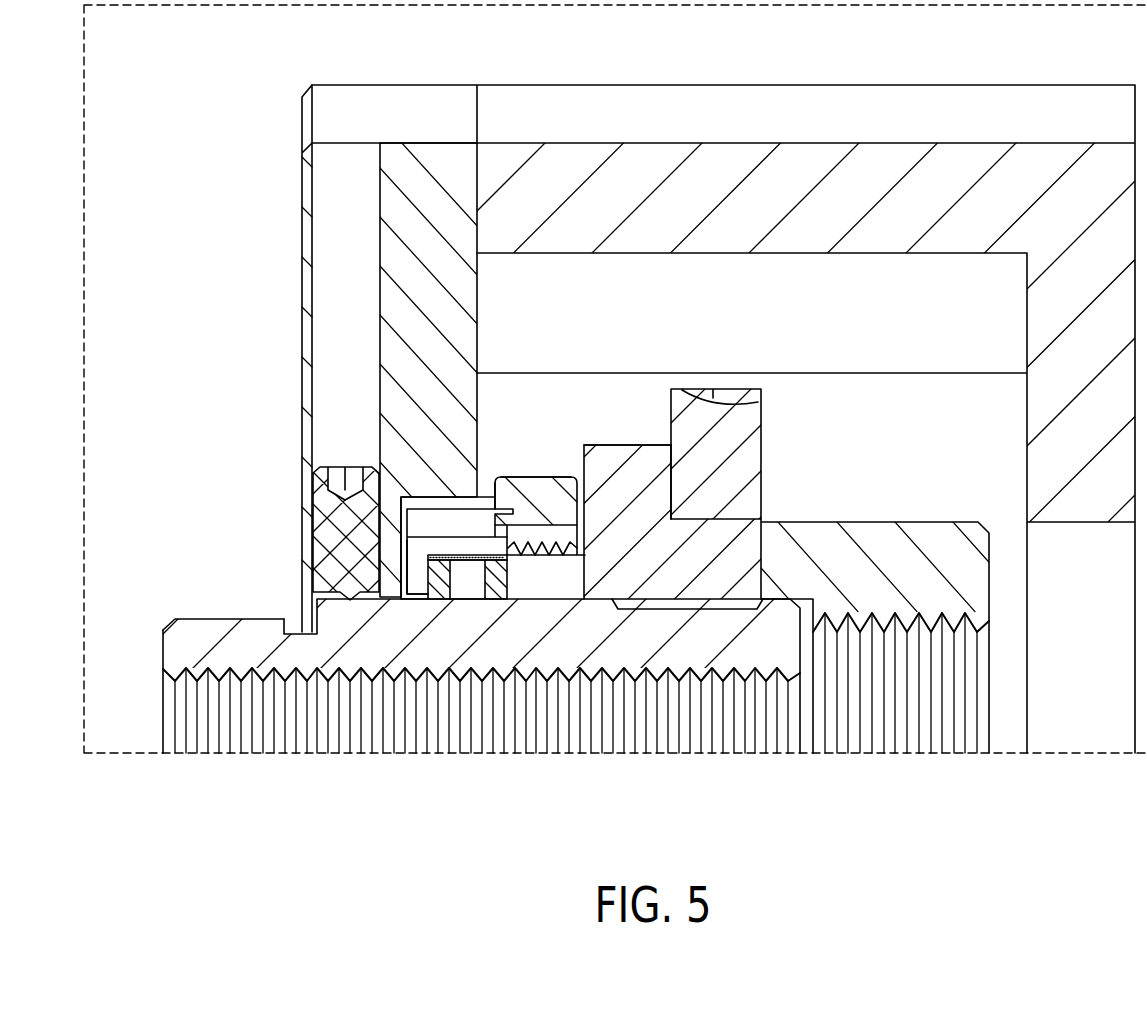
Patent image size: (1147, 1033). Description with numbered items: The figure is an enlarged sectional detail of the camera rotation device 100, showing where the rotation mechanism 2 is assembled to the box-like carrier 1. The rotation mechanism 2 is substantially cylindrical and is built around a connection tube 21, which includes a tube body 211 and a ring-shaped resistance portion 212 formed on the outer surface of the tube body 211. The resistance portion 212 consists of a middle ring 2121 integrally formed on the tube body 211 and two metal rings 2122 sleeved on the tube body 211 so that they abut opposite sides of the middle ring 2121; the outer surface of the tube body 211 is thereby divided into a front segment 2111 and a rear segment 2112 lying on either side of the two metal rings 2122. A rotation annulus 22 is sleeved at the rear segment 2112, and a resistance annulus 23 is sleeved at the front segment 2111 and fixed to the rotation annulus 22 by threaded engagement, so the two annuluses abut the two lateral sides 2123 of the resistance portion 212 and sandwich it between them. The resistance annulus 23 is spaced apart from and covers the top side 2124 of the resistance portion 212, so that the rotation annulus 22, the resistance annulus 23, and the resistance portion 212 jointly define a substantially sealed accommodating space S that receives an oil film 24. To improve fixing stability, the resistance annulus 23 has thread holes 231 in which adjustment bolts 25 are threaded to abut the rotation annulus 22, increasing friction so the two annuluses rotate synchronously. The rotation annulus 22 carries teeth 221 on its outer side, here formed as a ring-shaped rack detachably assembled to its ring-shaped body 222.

The camera rotation device 100 is at (289, 85).
The carrier 1 is at (304, 234).
The rotation mechanism 2 is at (920, 522).
The connection tube 21 is at (525, 852).
The tube body 211 is at (167, 653).
The front segment 2111 is at (223, 619).
The rear segment 2112 is at (722, 599).
The resistance portion 212 is at (630, 806).
The middle ring 2121 is at (463, 582).
The metal rings 2122 is at (500, 582).
The lateral sides 2123 is at (427, 576).
The top side 2124 is at (442, 553).
The rotation annulus 22 is at (603, 329).
The teeth 221 is at (759, 411).
The ring-shaped body 222 is at (641, 447).
The resistance annulus 23 is at (557, 479).
The thread holes 231 is at (508, 546).
The oil film 24 is at (461, 556).
The adjustment bolts 25 is at (532, 495).
The accommodating space S is at (483, 555).